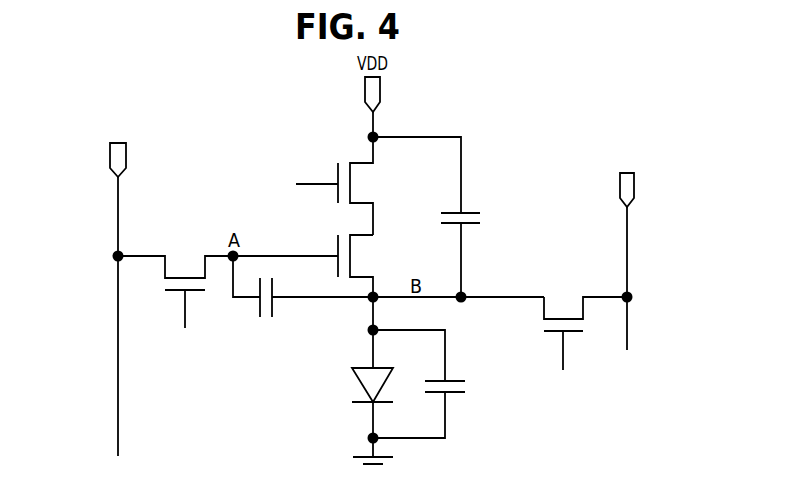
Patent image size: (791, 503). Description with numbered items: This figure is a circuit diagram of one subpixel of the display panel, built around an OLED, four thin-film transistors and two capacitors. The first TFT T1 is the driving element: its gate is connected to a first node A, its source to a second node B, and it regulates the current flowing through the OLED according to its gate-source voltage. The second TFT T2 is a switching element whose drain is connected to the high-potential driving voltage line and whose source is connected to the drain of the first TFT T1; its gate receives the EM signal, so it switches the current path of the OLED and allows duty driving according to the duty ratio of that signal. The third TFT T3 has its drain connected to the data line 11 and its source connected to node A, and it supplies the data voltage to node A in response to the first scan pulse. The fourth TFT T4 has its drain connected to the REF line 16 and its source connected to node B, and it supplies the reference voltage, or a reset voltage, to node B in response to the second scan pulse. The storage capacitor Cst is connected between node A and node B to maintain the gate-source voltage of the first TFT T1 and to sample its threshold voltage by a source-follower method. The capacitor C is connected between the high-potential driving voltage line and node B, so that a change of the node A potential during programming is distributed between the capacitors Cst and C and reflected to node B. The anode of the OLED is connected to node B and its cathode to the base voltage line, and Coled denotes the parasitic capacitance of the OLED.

The data line 11 is at (118, 226).
The REF line 16 is at (627, 228).
The first TFT T1 is at (316, 266).
The second TFT T2 is at (334, 186).
The third TFT T3 is at (175, 292).
The fourth TFT T4 is at (582, 334).
The capacitor C is at (469, 250).
The storage capacitor Cst is at (255, 298).
The element OLED is at (345, 380).
The parasitic capacitance of the OLED Coled is at (440, 384).